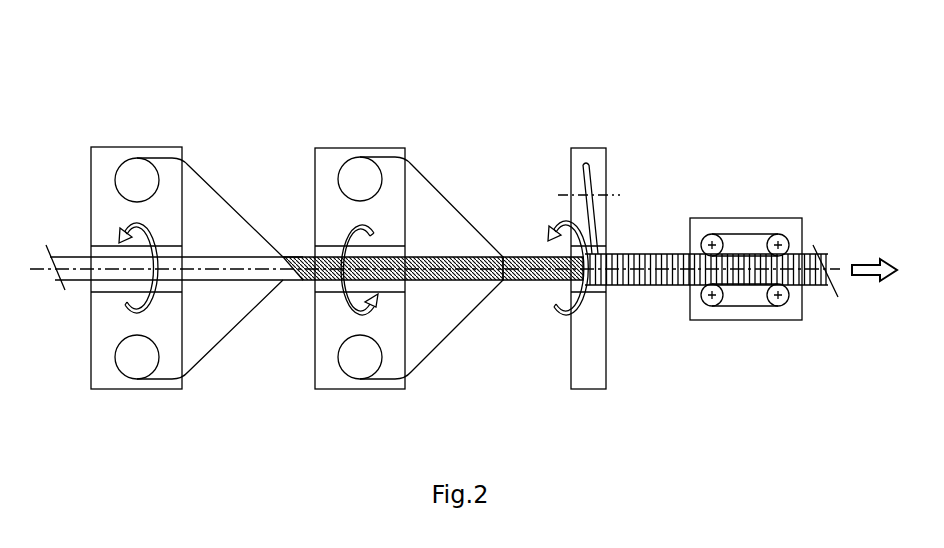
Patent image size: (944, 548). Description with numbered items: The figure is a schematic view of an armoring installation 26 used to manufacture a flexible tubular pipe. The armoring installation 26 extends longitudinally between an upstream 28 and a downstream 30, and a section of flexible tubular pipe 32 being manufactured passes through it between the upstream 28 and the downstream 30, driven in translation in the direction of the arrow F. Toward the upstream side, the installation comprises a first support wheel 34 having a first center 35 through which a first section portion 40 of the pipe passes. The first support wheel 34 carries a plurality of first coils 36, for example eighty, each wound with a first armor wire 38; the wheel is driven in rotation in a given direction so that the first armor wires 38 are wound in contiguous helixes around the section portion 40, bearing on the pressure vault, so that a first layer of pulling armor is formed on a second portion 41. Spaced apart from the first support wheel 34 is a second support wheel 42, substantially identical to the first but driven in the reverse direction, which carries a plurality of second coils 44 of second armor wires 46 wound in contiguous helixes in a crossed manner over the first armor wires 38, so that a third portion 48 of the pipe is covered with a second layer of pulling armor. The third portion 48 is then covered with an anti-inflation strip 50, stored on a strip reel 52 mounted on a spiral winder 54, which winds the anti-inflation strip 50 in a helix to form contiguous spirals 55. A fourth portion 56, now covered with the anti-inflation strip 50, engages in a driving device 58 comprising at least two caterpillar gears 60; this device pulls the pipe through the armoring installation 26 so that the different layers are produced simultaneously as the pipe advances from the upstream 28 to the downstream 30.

The armoring installation 26 is at (456, 92).
The upstream 28 is at (156, 253).
The downstream 30 is at (752, 248).
The section of flexible tubular pipe 32 is at (711, 293).
The first support wheel 34 is at (102, 382).
The first center 35 is at (100, 250).
The first coils 36 is at (132, 165).
The first armor wire 38 is at (240, 214).
The first section portion 40 is at (240, 282).
The second portion 41 is at (445, 282).
The second support wheel 42 is at (330, 382).
The second coils 44 is at (358, 168).
The second armor wires 46 is at (485, 236).
The third portion 48 is at (525, 256).
The anti-inflation strip 50 is at (598, 236).
The strip reel 52 is at (593, 181).
The spiral winder 54 is at (588, 382).
The contiguous spirals 55 is at (675, 282).
The fourth portion 56 is at (632, 277).
The driving device 58 is at (748, 322).
The caterpillar gears 60 is at (735, 257).
The arrow F is at (865, 262).